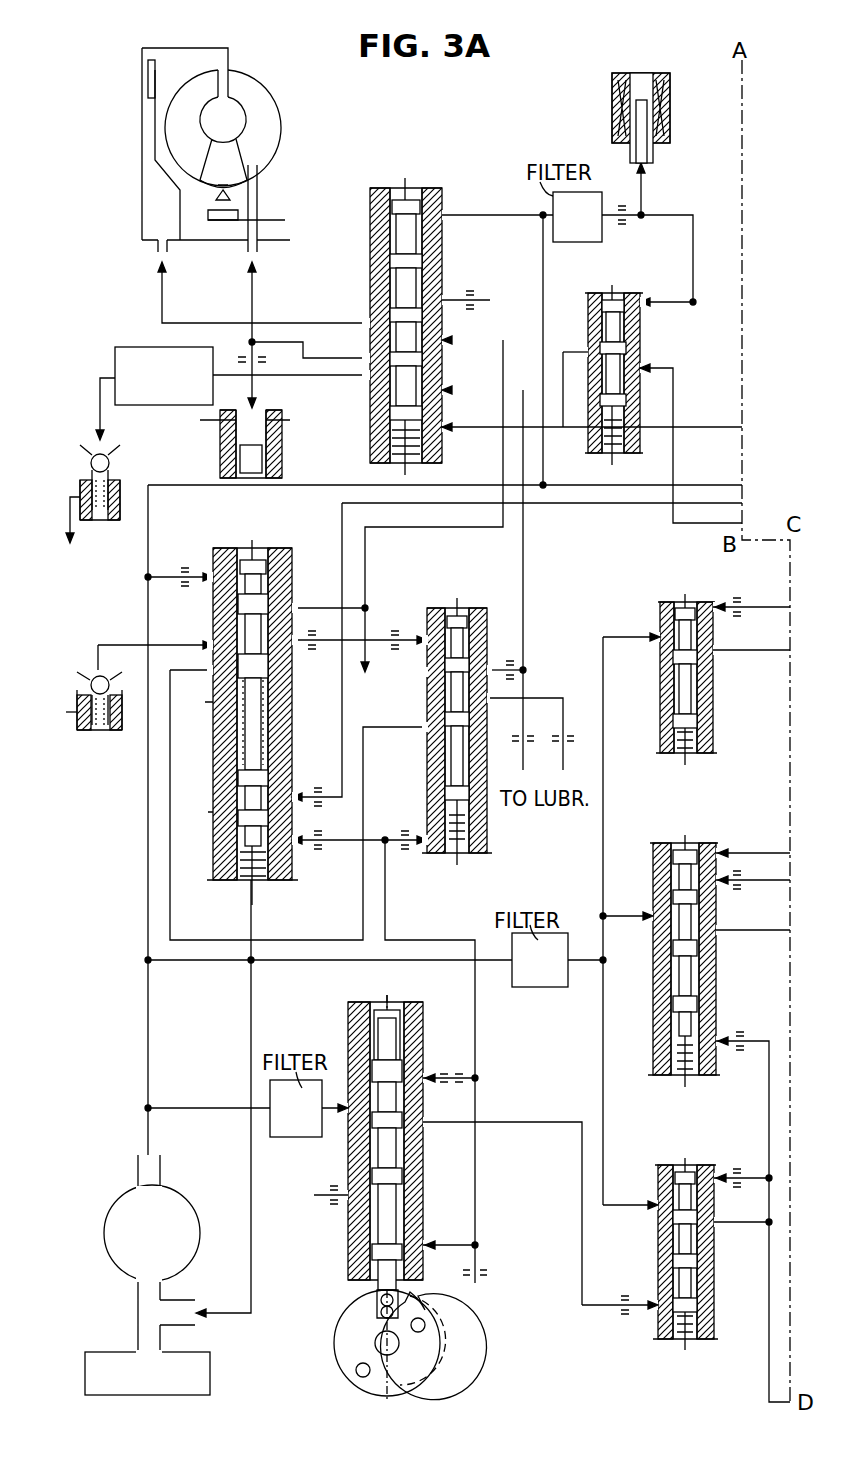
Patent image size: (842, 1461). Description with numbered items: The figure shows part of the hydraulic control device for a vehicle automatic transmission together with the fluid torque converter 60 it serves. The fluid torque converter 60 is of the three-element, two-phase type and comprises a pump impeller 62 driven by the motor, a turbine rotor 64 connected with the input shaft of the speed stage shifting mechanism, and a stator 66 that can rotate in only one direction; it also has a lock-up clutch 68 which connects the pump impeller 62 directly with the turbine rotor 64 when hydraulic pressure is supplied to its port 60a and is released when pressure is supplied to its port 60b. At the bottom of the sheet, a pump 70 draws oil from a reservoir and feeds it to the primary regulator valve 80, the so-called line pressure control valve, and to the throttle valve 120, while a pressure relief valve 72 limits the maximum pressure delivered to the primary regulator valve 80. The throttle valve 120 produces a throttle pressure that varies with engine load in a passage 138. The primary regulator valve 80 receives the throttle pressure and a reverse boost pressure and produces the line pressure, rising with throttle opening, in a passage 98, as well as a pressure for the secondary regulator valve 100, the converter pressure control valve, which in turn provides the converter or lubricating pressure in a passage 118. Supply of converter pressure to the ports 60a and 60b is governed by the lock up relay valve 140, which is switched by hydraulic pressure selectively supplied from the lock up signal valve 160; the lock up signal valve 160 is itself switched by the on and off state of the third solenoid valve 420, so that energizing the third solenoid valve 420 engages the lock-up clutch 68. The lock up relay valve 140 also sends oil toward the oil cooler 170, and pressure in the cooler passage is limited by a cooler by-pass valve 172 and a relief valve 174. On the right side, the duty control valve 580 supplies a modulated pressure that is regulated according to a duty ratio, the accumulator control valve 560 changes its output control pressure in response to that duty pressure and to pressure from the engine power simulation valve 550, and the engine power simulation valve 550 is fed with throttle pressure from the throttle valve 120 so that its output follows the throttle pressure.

The fluid torque converter 60 is at (285, 110).
The pump impeller 62 is at (262, 100).
The turbine rotor 64 is at (172, 128).
The stator 66 is at (240, 165).
The lock-up clutch 68 is at (148, 84).
The port 60a is at (260, 253).
The port 60b is at (155, 255).
The pump 70 is at (128, 1192).
The pressure relief valve 72 is at (92, 740).
The primary regulator valve 80 is at (284, 885).
The passage 98 is at (146, 550).
The secondary regulator valve 100 is at (456, 862).
The passage 118 is at (502, 660).
The throttle valve 120 is at (345, 1240).
The passage 138 is at (470, 1122).
The lock up relay valve 140 is at (445, 442).
The lock up signal valve 160 is at (652, 440).
The oil cooler 170 is at (118, 347).
The cooler by-pass valve 172 is at (220, 452).
The relief valve 174 is at (82, 446).
The third solenoid valve 420 is at (672, 147).
The engine power simulation valve 550 is at (660, 1345).
The accumulator control valve 560 is at (648, 1003).
The duty control valve 580 is at (718, 712).